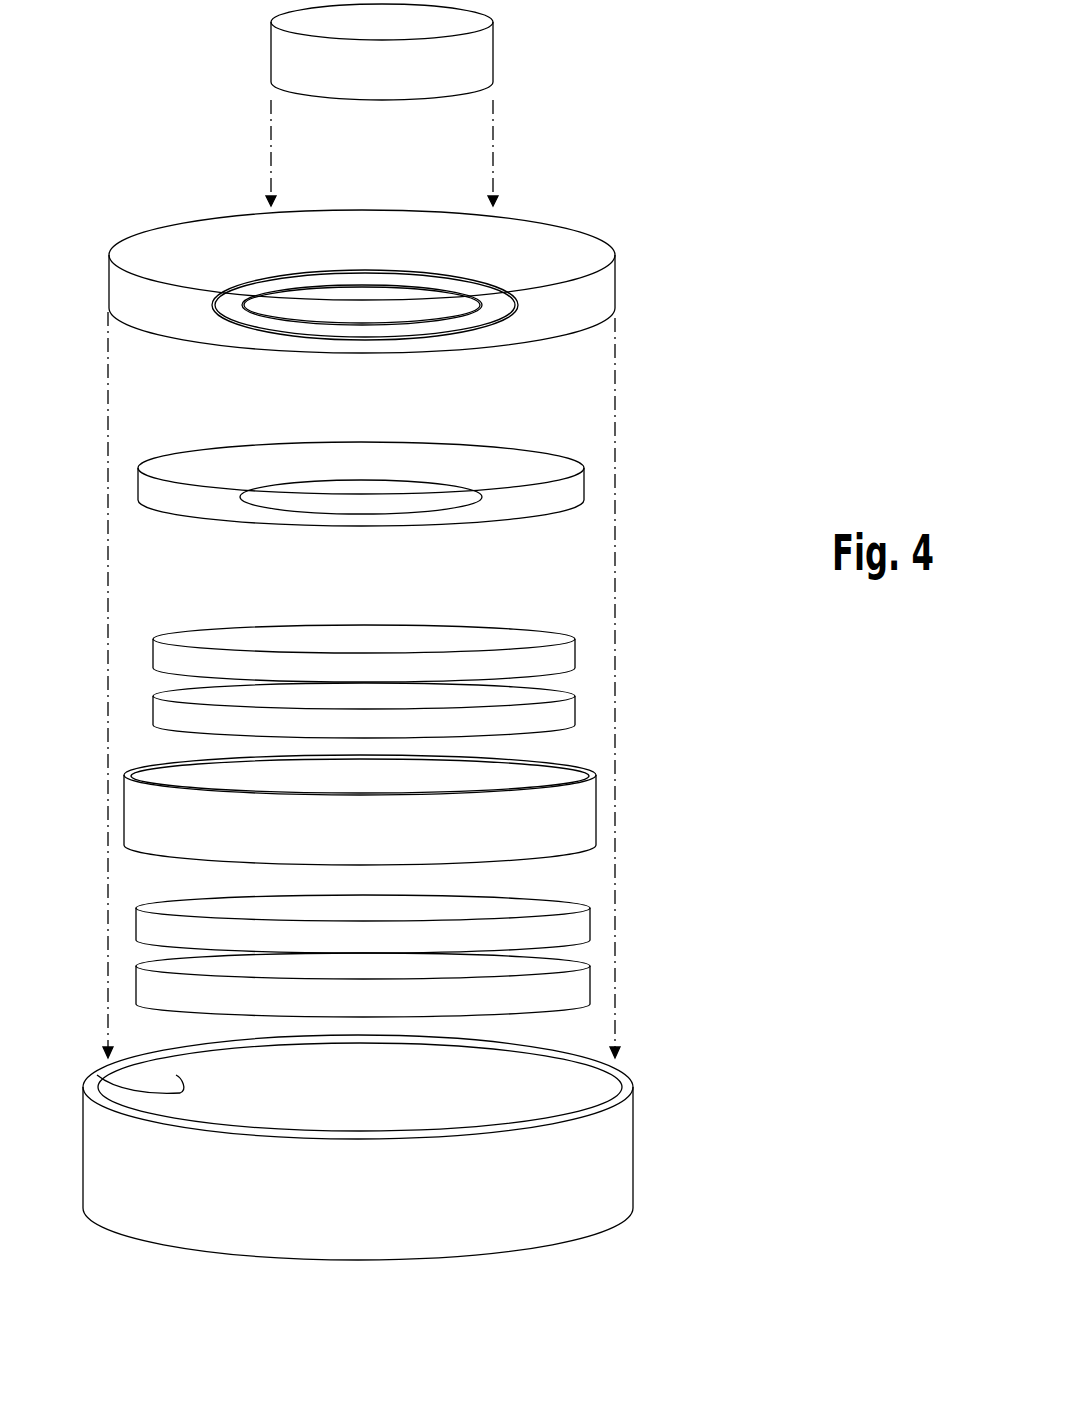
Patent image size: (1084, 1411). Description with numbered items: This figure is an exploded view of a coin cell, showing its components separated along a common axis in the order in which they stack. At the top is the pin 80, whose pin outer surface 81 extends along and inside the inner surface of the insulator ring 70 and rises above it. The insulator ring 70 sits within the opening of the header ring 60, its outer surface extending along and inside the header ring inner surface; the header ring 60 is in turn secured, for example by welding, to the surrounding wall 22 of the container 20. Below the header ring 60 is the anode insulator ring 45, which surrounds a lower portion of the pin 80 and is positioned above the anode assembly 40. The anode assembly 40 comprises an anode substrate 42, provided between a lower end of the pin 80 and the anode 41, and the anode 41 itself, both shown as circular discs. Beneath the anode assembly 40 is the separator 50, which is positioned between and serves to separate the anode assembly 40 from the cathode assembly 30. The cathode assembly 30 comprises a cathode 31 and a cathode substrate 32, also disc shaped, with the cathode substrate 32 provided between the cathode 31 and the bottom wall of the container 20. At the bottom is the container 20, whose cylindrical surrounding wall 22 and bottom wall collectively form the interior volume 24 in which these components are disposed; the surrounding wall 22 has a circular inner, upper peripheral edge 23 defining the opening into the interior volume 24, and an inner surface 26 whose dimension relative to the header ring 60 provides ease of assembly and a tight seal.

The pin 80 is at (496, 68).
The pin outer surface 81 is at (422, 44).
The header ring 60 is at (448, 281).
The insulator ring 70 is at (488, 307).
The anode insulator ring 45 is at (584, 480).
The anode assembly 40 is at (495, 676).
The anode substrate 42 is at (572, 658).
The anode 41 is at (572, 707).
The separator 50 is at (590, 813).
The cathode assembly 30 is at (499, 953).
The cathode 31 is at (583, 928).
The cathode substrate 32 is at (583, 980).
The container 20 is at (501, 1172).
The surrounding wall 22 is at (520, 1188).
The inner, upper peripheral edge 23 is at (548, 1058).
The interior volume 24 is at (362, 1080).
The inner surface 26 is at (97, 1075).